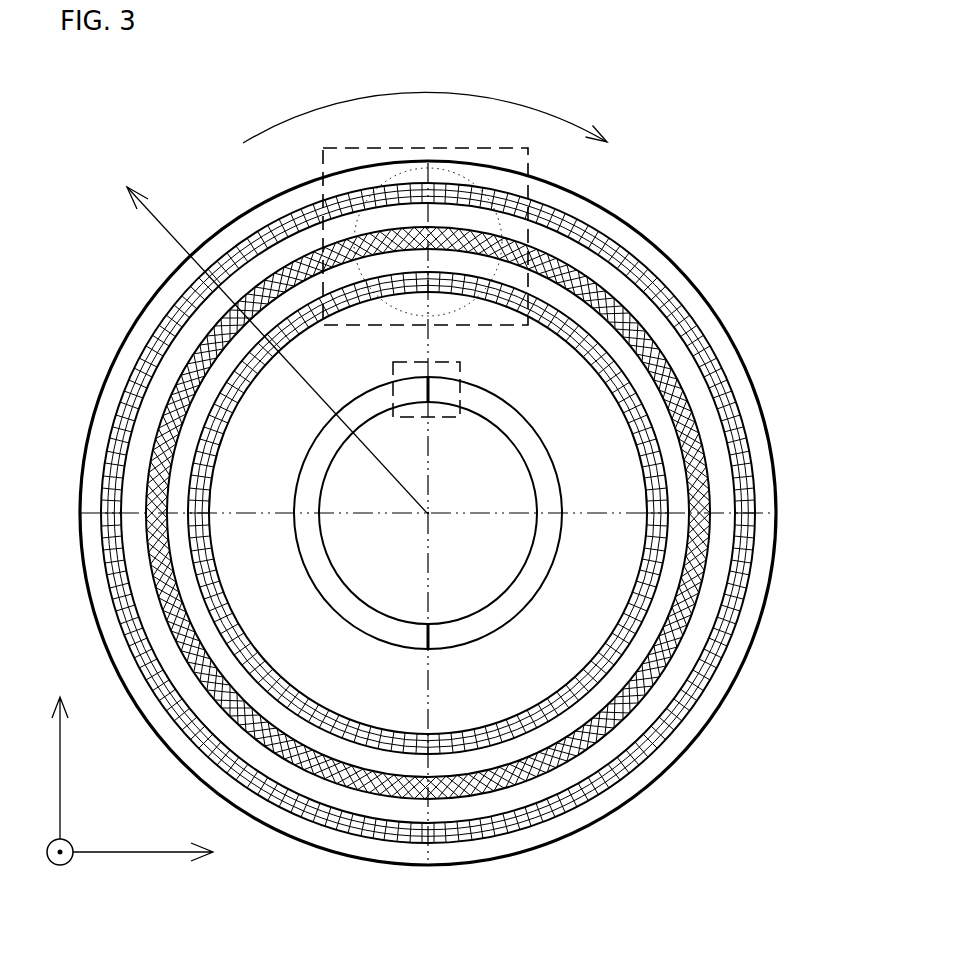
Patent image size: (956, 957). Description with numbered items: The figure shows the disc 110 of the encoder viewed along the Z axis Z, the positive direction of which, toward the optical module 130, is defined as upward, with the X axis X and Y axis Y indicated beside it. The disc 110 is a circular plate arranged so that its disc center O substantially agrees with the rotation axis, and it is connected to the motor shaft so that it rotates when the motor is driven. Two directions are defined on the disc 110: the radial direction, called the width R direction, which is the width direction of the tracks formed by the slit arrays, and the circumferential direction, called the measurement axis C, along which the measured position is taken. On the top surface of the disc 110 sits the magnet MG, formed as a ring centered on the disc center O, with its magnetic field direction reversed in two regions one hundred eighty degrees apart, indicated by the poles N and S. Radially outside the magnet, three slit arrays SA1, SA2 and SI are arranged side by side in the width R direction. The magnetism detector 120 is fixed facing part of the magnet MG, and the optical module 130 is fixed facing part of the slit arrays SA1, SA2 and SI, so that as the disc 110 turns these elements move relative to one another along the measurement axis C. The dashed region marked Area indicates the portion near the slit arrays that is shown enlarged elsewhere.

The disc 110 is at (770, 413).
The magnetism detector 120 is at (462, 394).
The optical module 130 is at (533, 194).
The slit array SA1 is at (665, 530).
The slit array SA2 is at (730, 637).
The slit array SI is at (670, 665).
The magnet MG is at (430, 647).
The north pole N is at (301, 514).
The south pole S is at (545, 514).
The disc center O is at (427, 513).
The area Area is at (337, 231).
The measurement axis C is at (440, 130).
The width R is at (264, 342).
The X axis X is at (152, 853).
The Y axis Y is at (60, 753).
The Z axis Z is at (47, 853).